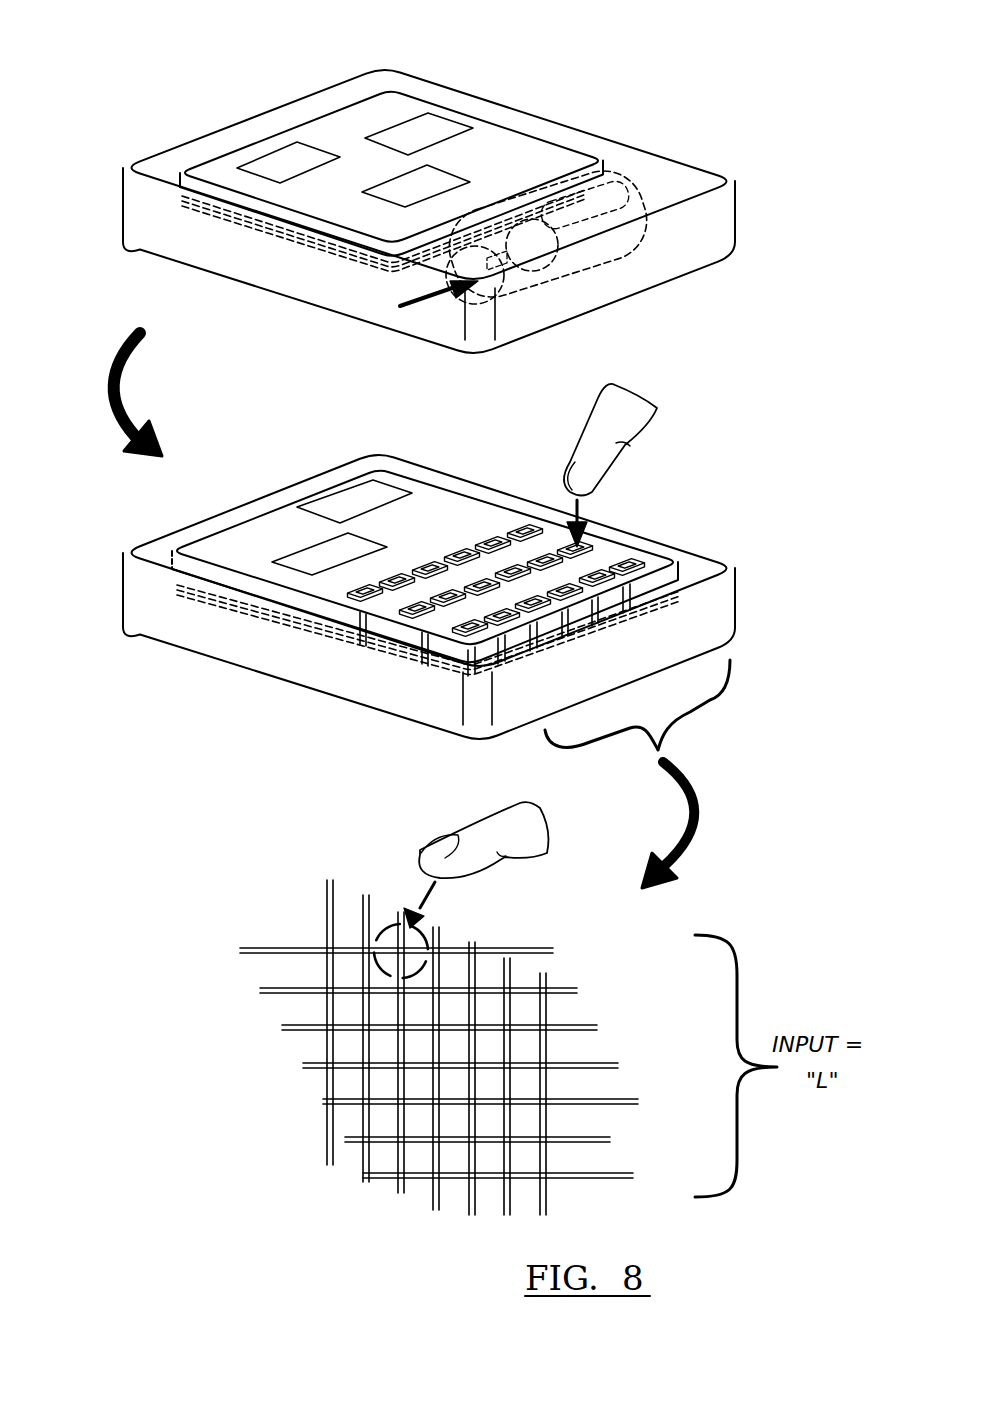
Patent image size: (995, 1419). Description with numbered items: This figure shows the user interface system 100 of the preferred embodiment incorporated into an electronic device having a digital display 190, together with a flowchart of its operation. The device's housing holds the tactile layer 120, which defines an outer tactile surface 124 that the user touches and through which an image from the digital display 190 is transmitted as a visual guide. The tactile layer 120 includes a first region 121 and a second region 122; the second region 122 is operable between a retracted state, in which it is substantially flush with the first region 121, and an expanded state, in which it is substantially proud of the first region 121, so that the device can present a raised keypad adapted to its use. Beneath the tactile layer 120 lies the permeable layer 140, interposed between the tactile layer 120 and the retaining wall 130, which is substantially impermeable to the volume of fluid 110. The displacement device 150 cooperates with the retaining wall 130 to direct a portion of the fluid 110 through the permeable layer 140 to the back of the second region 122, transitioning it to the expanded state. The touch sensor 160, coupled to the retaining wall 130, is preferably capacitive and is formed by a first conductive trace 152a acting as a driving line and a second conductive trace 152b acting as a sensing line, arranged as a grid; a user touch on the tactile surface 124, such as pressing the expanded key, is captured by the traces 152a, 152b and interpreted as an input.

The user interface system 100 is at (197, 70).
The volume of fluid 110 is at (610, 237).
The tactile layer 120 is at (444, 173).
The tactile surface 124 is at (540, 152).
The first region 121 is at (448, 510).
The second region 122 is at (491, 482).
The retaining wall 130 is at (182, 202).
The permeable layer 140 is at (192, 183).
The displacement device 150 is at (563, 270).
The touch sensor 160 is at (498, 896).
The first conductive trace 152a is at (668, 587).
The second conductive trace 152b is at (398, 650).
The digital display 190 is at (200, 207).